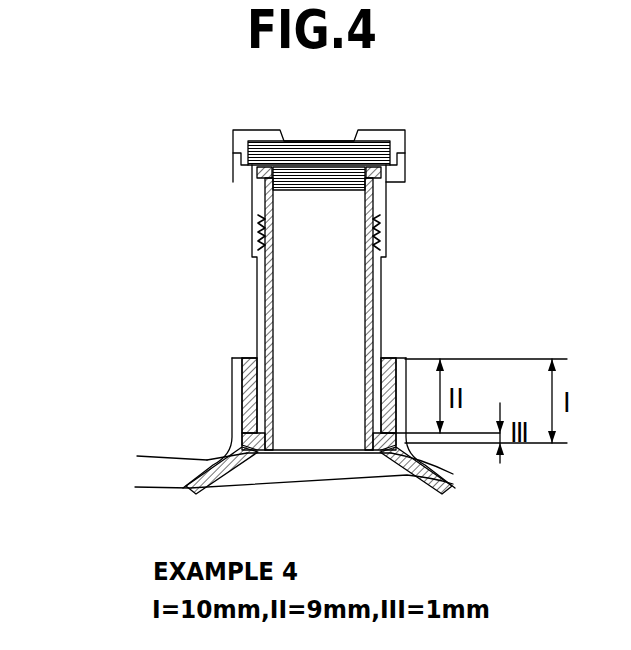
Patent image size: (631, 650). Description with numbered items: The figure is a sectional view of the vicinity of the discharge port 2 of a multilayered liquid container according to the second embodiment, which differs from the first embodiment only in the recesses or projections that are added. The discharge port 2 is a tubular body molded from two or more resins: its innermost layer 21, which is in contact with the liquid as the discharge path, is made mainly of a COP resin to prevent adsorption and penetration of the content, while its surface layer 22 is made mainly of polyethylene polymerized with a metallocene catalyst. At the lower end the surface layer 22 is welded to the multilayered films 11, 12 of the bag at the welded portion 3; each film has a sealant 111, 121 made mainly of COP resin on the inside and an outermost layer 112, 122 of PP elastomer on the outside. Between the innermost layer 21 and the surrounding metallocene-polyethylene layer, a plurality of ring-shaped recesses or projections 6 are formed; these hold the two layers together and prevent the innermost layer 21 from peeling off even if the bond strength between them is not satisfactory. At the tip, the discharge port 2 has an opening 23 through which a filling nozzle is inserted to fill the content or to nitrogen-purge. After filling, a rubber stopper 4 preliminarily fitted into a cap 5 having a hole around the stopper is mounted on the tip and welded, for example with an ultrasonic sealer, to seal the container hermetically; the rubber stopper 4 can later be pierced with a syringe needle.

The discharge port 2 is at (482, 192).
The welded portion 3 is at (252, 367).
The rubber stopper 4 is at (300, 168).
The cap 5 is at (243, 140).
The recess and projection 6 is at (381, 240).
The multilayered film 11 is at (80, 355).
The multilayered film 12 is at (80, 440).
The innermost layer of discharge port 21 is at (246, 445).
The surface layer of discharge port 22 is at (240, 430).
The opening 23 is at (322, 255).
The sealant of multilayered film 111 is at (245, 458).
The outermost layer of multilayered film 112 is at (232, 453).
The sealant of multilayered film 121 is at (268, 489).
The outermost layer of multilayered film 122 is at (145, 453).